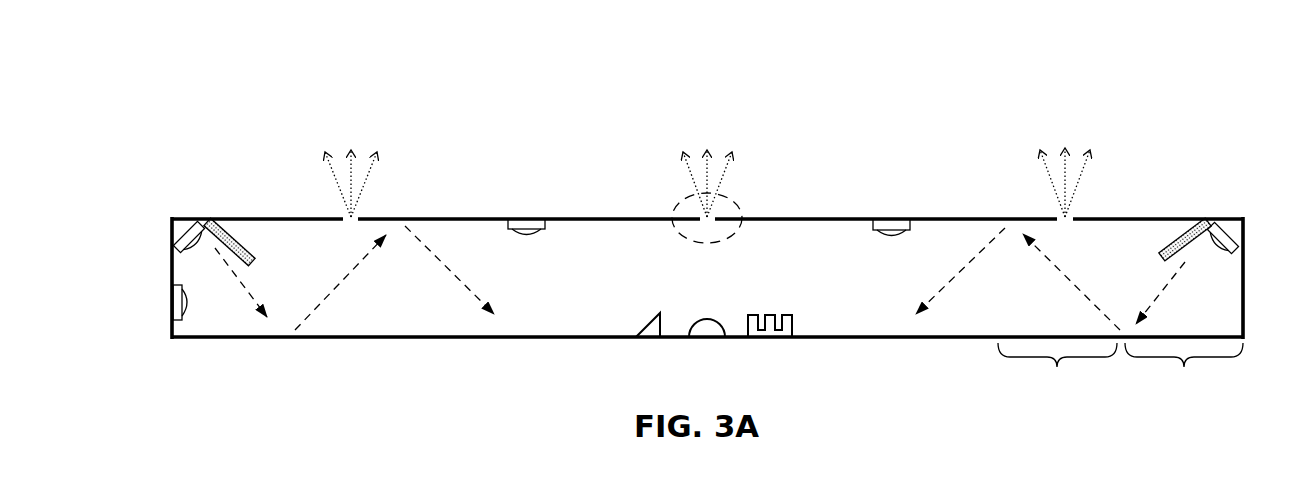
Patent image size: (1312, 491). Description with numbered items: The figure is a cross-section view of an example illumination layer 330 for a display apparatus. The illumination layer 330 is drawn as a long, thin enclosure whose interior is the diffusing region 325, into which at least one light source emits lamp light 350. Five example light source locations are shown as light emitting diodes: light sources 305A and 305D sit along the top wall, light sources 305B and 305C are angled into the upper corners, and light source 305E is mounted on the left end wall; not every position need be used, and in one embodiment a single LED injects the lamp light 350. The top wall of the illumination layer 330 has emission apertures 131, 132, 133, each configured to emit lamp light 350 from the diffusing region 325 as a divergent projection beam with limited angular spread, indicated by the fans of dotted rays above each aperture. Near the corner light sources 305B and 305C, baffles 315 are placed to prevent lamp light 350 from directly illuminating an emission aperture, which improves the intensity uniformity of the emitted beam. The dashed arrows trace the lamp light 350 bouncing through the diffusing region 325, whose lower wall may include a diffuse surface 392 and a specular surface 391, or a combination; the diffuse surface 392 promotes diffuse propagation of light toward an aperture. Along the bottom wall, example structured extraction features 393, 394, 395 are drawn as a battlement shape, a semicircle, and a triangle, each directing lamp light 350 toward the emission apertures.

The illumination layer 330 is at (1113, 95).
The diffusing region 325 is at (795, 278).
The baffle 315 is at (238, 219).
The light source 305A is at (525, 221).
The light source 305B is at (194, 219).
The light source 305C is at (1222, 219).
The light source 305D is at (892, 221).
The light source 305E is at (183, 315).
The emission aperture 131 is at (355, 214).
The emission aperture 132 is at (706, 215).
The emission aperture 133 is at (1059, 214).
The lamp light 350 is at (246, 293).
The specular surface 391 is at (1184, 396).
The diffuse surface 392 is at (1057, 396).
The structured extraction feature 393 is at (785, 335).
The structured extraction feature 394 is at (717, 338).
The structured extraction feature 395 is at (652, 338).